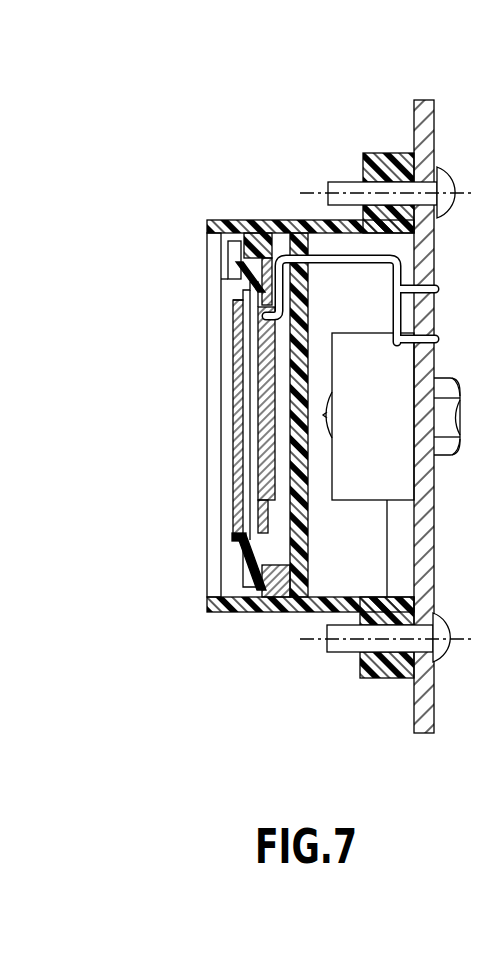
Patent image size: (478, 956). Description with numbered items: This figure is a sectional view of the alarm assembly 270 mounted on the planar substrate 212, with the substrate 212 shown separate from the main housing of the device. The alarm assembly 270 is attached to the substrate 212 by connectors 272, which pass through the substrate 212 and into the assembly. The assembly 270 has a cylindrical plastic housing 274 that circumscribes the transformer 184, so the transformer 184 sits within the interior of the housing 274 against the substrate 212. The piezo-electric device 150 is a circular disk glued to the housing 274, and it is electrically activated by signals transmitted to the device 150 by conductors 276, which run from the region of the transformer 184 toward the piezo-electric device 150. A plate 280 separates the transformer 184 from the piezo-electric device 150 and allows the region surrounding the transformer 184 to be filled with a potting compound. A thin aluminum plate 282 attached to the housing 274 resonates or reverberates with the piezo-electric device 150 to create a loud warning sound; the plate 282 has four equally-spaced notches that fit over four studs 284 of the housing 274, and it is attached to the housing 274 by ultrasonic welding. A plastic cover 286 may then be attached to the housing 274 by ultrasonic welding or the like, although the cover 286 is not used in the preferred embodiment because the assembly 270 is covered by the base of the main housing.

The piezo-electric device 150 is at (258, 450).
The transformer 184 is at (355, 362).
The planar substrate 212 is at (413, 716).
The alarm assembly 270 is at (260, 388).
The connectors 272 is at (334, 181).
The cylindrical plastic housing 274 is at (230, 608).
The conductors 276 is at (330, 253).
The plate 280 is at (245, 586).
The thin aluminum plate 282 is at (240, 372).
The studs 284 is at (237, 284).
The plastic cover 286 is at (207, 328).